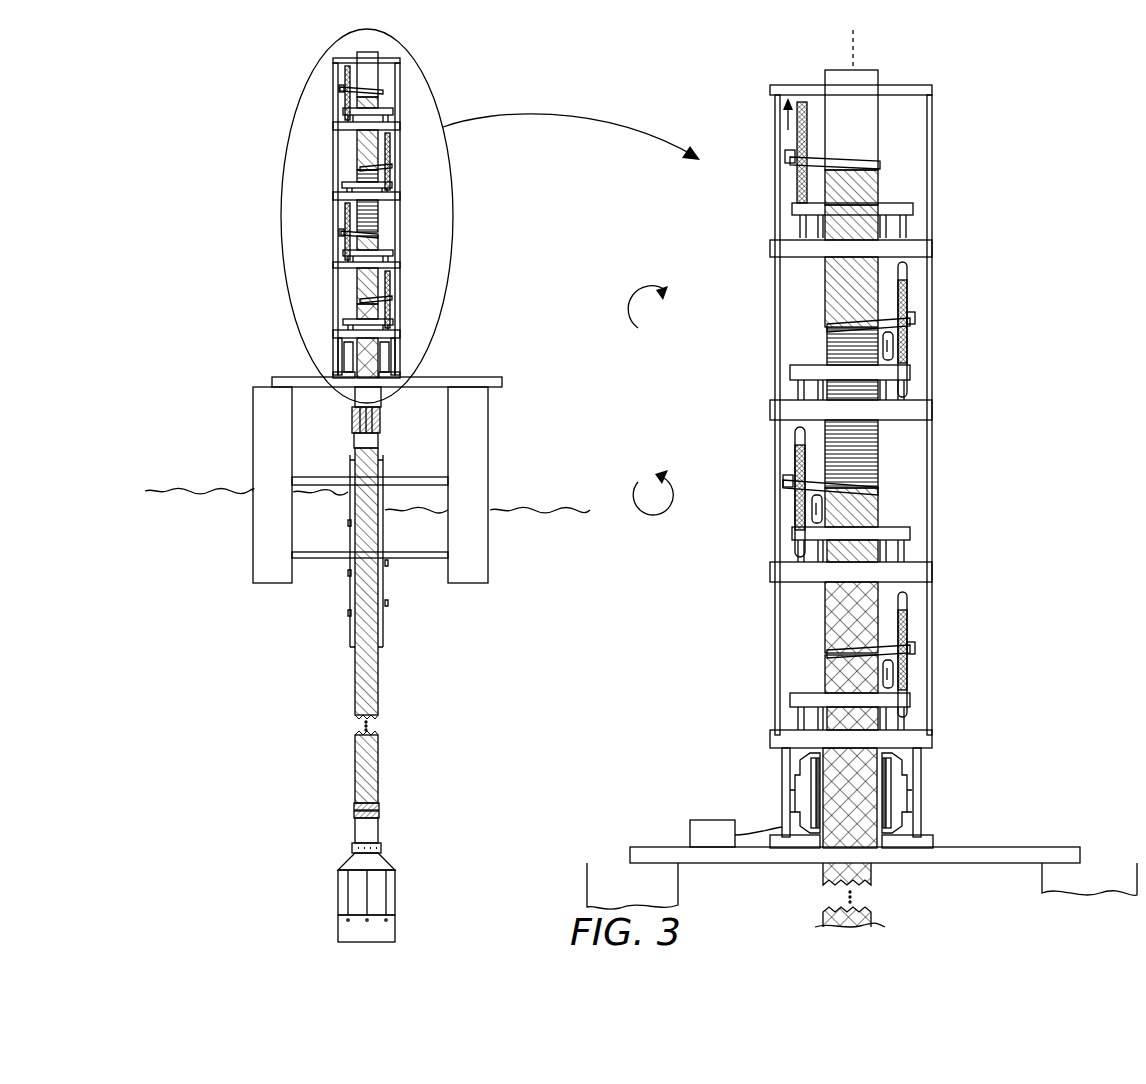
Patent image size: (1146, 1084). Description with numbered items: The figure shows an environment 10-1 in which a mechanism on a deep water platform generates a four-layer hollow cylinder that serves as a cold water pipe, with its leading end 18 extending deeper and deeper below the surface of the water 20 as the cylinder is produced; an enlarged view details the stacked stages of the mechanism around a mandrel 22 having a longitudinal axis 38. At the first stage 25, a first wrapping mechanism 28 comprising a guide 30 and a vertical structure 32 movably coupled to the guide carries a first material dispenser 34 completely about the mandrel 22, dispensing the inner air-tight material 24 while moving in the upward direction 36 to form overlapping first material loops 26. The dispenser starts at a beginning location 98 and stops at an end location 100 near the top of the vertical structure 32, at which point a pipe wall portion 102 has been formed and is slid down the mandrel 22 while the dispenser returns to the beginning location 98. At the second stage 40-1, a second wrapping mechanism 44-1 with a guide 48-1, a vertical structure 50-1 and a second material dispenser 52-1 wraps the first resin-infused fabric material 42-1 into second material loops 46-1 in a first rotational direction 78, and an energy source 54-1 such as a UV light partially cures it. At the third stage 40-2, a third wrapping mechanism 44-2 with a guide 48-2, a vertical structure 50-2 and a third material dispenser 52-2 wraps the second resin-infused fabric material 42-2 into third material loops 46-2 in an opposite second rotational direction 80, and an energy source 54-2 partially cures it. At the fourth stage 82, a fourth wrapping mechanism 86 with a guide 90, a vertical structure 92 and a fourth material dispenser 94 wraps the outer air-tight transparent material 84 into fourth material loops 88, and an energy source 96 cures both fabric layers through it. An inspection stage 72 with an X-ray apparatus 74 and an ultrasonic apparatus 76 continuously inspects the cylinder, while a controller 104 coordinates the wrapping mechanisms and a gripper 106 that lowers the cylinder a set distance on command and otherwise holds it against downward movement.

The environment 10-1 is at (272, 46).
The water 20 is at (203, 490).
The gripper 106 is at (382, 414).
The leading end 18 is at (405, 849).
The longitudinal axis 38 is at (848, 46).
The mandrel 22 is at (868, 78).
The inner air-tight material 24 is at (870, 190).
The pipe wall portion 102 is at (893, 150).
The end location 100 is at (770, 107).
The first stage 25 is at (900, 108).
The upward direction 36 is at (786, 153).
The first material dispenser 34 is at (786, 158).
The first material loops 26 is at (870, 165).
The first wrapping mechanism 28 is at (760, 240).
The beginning location 98 is at (772, 190).
The guide 30 is at (908, 212).
The vertical structure 32 is at (794, 186).
The vertical structure 50-1 is at (908, 268).
The second material dispenser 52-1 is at (912, 318).
The second stage 40-1 is at (798, 276).
The second material loops 46-1 is at (832, 324).
The first resin-infused fabric material 42-1 is at (832, 346).
The second wrapping mechanism 44-1 is at (950, 262).
The guide 48-1 is at (795, 375).
The energy source 54-1 is at (905, 352).
The vertical structure 50-2 is at (798, 430).
The third material dispenser 52-2 is at (795, 450).
The third wrapping mechanism 44-2 is at (758, 570).
The third stage 40-2 is at (912, 440).
The third material loops 46-2 is at (868, 488).
The second resin-infused fabric material 42-2 is at (870, 508).
The energy source 54-2 is at (795, 518).
The guide 48-2 is at (905, 535).
The fourth stage 82 is at (798, 601).
The vertical structure 92 is at (908, 600).
The fourth material dispenser 94 is at (912, 645).
The fourth material loops 88 is at (840, 652).
The outer air-tight transparent material 84 is at (832, 680).
The fourth wrapping mechanism 86 is at (943, 590).
The guide 90 is at (795, 702).
The energy source 96 is at (905, 688).
The inspection stage 72 is at (770, 763).
The ultrasonic apparatus 76 is at (800, 810).
The X-ray apparatus 74 is at (900, 810).
The controller 104 is at (705, 822).
The first rotational direction 78 is at (638, 328).
The second rotational direction 80 is at (638, 482).